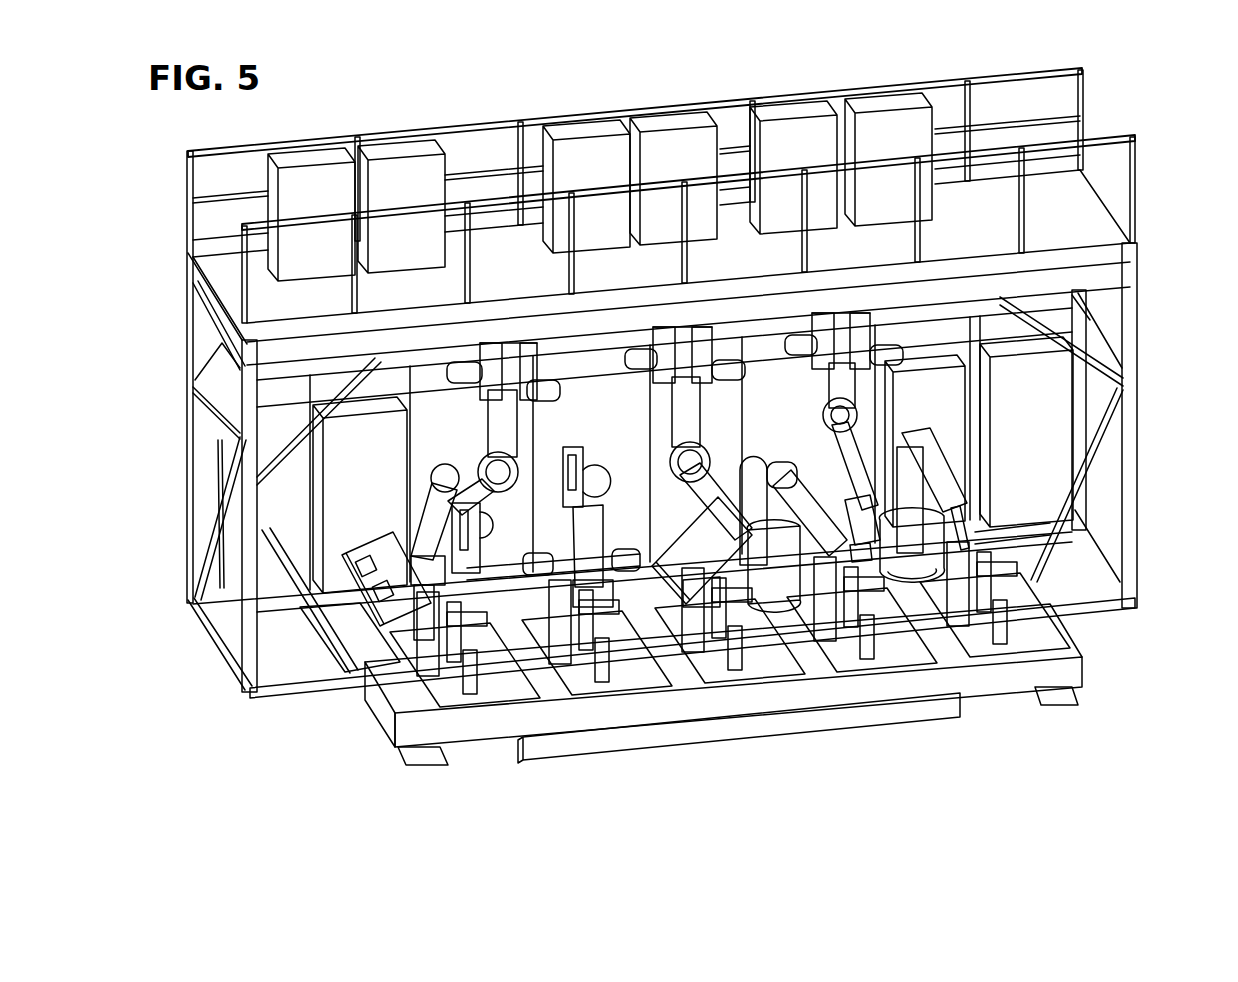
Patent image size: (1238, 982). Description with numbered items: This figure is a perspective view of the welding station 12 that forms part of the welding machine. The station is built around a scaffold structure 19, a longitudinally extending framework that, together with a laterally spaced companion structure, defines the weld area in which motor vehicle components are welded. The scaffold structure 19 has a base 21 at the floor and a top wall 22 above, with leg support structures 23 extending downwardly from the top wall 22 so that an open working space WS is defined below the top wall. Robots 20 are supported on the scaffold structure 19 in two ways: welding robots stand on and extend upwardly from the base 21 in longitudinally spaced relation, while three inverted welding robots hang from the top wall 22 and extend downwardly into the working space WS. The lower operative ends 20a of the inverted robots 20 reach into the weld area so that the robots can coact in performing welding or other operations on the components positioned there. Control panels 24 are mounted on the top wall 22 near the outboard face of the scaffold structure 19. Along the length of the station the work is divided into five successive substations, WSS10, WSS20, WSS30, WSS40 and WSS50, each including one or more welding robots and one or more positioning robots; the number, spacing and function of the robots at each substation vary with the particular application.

The welding station 12 is at (1160, 286).
The scaffold structure 19 is at (161, 245).
The robots 20 is at (523, 428).
The lower operative ends 20a is at (482, 553).
The base 21 is at (203, 637).
The top wall 22 is at (190, 283).
The leg support structures 23 is at (190, 420).
The control panels 24 is at (583, 130).
The working space WS is at (466, 424).
The weld station substation 10 WSS10 is at (997, 655).
The weld station substation 20 WSS20 is at (873, 663).
The weld station substation 30 WSS30 is at (742, 685).
The weld station substation 40 WSS40 is at (600, 687).
The weld station substation 50 WSS50 is at (470, 700).